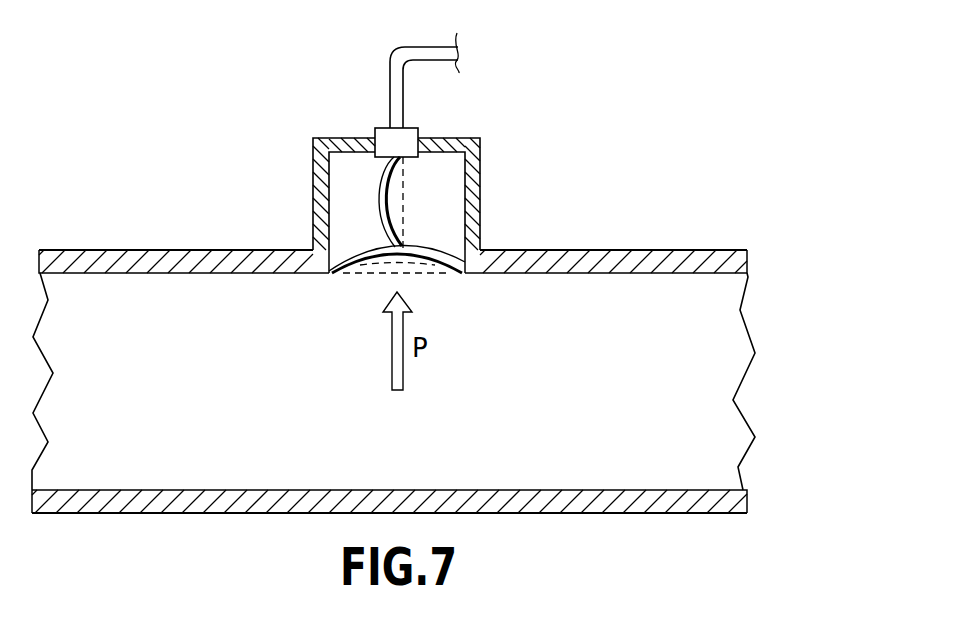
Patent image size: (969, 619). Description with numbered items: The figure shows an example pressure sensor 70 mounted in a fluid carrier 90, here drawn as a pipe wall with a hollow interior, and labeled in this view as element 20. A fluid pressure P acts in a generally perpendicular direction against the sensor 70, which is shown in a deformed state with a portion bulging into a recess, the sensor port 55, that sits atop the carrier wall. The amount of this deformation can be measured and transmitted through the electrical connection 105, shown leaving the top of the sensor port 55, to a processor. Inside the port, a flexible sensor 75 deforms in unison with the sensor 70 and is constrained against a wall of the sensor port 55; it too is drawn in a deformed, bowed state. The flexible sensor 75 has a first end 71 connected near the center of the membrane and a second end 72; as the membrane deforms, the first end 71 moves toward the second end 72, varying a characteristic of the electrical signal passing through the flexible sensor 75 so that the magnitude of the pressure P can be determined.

The pipe 20 is at (418, 346).
The fluid carrier 90 is at (176, 250).
The sensor port 55 is at (460, 138).
The electrical connection 105 is at (390, 89).
The pressure sensor 70 is at (360, 279).
The first end 71 is at (411, 235).
The second end 72 is at (411, 166).
The flexible sensor 75 is at (373, 193).